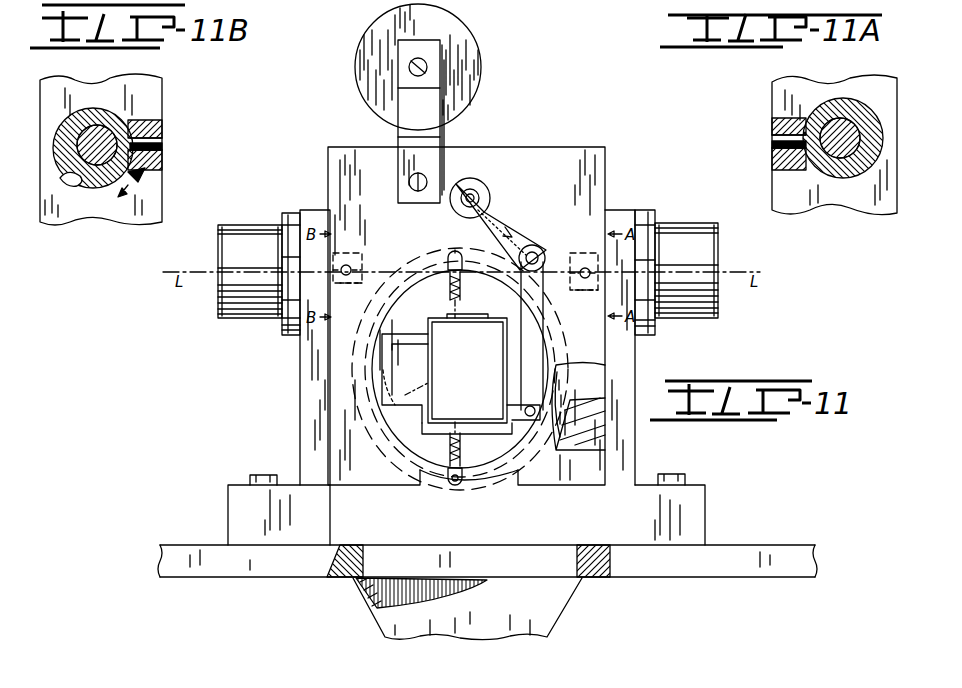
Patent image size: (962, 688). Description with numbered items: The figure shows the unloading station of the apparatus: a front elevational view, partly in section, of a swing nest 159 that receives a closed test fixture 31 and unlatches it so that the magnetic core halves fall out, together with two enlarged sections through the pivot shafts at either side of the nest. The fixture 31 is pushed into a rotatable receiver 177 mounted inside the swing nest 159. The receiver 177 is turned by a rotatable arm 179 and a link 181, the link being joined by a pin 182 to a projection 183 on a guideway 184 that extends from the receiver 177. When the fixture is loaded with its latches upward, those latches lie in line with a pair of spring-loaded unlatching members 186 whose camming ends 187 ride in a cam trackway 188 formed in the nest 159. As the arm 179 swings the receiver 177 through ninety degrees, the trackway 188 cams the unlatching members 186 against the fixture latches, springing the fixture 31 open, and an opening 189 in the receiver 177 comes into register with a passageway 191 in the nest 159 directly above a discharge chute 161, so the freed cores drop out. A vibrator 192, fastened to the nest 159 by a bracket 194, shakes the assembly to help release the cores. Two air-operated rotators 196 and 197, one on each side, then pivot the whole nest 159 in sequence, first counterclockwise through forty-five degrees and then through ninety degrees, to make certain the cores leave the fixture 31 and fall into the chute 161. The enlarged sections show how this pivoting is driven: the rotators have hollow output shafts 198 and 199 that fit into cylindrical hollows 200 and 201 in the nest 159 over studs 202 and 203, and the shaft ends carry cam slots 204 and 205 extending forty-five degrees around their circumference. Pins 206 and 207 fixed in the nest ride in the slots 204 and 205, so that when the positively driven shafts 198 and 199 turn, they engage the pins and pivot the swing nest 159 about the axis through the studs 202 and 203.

In FIG. 11, the test fixture 31 is at (461, 339).
In FIG. 11, the swing nest 159 is at (588, 158).
In FIG. 11, the discharge chute 161 is at (399, 545).
In FIG. 11, the rotatable receiver 177 is at (418, 372).
In FIG. 11, the rotatable arm 179 is at (517, 194).
In FIG. 11, the link 181 is at (542, 270).
In FIG. 11, the pin 182 is at (530, 411).
In FIG. 11, the projection 183 is at (512, 405).
In FIG. 11, the guideway 184 is at (495, 430).
In FIG. 11, the spring-loaded unlatching members 186 is at (462, 300).
In FIG. 11, the camming ends 187 is at (458, 258).
In FIG. 11, the cam trackway 188 is at (405, 285).
In FIG. 11, the opening 189 is at (403, 385).
In FIG. 11, the passageway 191 is at (430, 473).
In FIG. 11, the vibrator 192 is at (473, 62).
In FIG. 11, the bracket 194 is at (440, 140).
In FIG. 11, the air-operated rotator 196 is at (668, 225).
In FIG. 11A, the air-operated rotator 196 is at (870, 210).
In FIG. 11, the air-operated rotator 197 is at (237, 240).
In FIG. 11B, the air-operated rotator 197 is at (145, 224).
In FIG. 11A, the hollow output shaft 198 is at (855, 108).
In FIG. 11B, the hollow output shaft 199 is at (103, 122).
In FIG. 11A, the cylindrical hollow 200 is at (840, 95).
In FIG. 11, the cylindrical hollow 201 is at (301, 261).
In FIG. 11B, the cylindrical hollow 201 is at (80, 172).
In FIG. 11A, the stud 202 is at (820, 140).
In FIG. 11B, the stud 203 is at (135, 128).
In FIG. 11, the cam slot 204 is at (585, 265).
In FIG. 11A, the cam slot 204 is at (810, 112).
In FIG. 11, the cam slot 205 is at (360, 290).
In FIG. 11B, the cam slot 205 is at (140, 178).
In FIG. 11, the pin 206 is at (588, 293).
In FIG. 11A, the pin 206 is at (790, 128).
In FIG. 11, the pin 207 is at (347, 264).
In FIG. 11B, the pin 207 is at (148, 152).